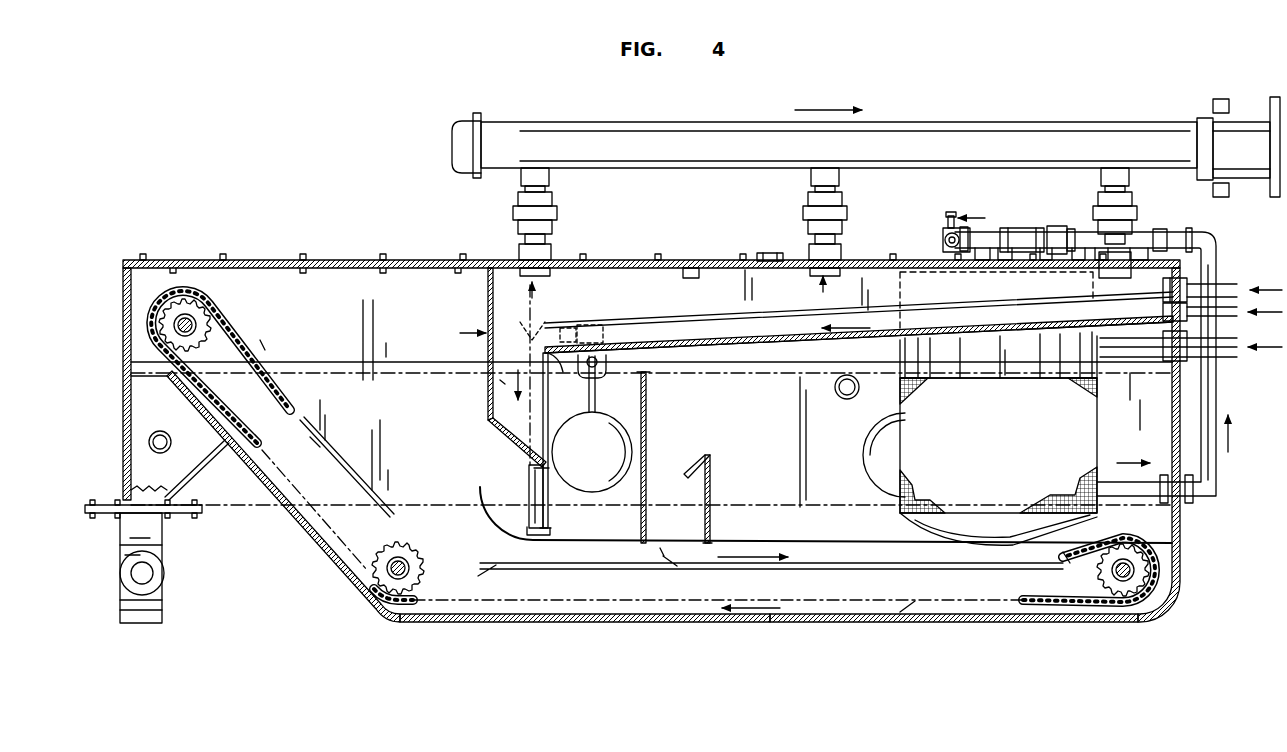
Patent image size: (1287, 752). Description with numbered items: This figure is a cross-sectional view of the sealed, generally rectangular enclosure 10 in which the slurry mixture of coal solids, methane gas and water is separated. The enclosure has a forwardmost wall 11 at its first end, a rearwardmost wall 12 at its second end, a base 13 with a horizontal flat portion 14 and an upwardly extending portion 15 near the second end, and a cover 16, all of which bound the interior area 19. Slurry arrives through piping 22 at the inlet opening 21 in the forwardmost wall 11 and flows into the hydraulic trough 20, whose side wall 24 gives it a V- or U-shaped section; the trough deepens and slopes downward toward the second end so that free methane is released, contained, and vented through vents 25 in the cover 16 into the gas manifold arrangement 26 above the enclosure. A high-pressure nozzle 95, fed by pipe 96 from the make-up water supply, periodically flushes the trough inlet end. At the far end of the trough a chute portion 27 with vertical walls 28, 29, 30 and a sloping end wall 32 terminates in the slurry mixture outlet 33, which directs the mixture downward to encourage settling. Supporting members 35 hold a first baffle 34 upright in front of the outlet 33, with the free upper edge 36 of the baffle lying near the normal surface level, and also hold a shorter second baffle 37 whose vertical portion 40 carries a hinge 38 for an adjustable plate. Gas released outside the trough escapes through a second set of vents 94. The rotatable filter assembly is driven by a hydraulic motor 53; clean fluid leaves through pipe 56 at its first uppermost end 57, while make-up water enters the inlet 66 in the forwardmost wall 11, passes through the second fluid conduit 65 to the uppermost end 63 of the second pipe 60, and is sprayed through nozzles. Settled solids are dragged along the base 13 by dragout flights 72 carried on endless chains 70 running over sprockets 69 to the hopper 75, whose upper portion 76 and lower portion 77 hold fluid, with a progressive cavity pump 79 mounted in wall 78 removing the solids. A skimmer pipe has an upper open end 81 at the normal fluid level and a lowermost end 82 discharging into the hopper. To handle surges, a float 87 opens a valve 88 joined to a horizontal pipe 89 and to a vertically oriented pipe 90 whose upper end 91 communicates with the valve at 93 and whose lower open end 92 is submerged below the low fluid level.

The enclosure 10 is at (272, 224).
The forwardmost wall 11 is at (1180, 402).
The rearwardmost wall 12 is at (122, 330).
The base 13 is at (722, 624).
The horizontal flat portion 14 is at (800, 623).
The upwardly extending portion 15 is at (322, 572).
The cover 16 is at (340, 258).
The interior area 19 is at (355, 532).
The hydraulic trough 20 is at (817, 352).
The inlet opening 21 is at (1163, 290).
The piping 22 is at (1225, 289).
The trough side wall 24 is at (692, 266).
The vents 25 is at (519, 248).
The gas manifold arrangement 26 is at (980, 125).
The chute portion 27 is at (459, 331).
The chute wall 28 is at (488, 402).
The chute wall 29 is at (549, 382).
The chute wall 30 is at (500, 383).
The sloping end wall 32 is at (528, 440).
The slurry mixture outlet 33 is at (537, 454).
The first baffle 34 is at (648, 432).
The supporting members 35 is at (788, 543).
The partition top edge 36 is at (651, 374).
The second baffle 37 is at (714, 496).
The hinge 38 is at (690, 472).
The vertical portion 40 is at (712, 462).
The hydraulic motor 53 is at (995, 233).
The pipe 56 is at (1062, 262).
The first uppermost end 57 is at (1062, 232).
The second pipe 60 is at (940, 238).
The uppermost end 63 is at (952, 268).
The second fluid conduit 65 is at (1040, 226).
The inlet 66 is at (1222, 352).
The sprockets 69 is at (208, 320).
The endless chains 70 is at (290, 398).
The dragout flights 72 is at (264, 345).
The hopper 75 is at (121, 410).
The upper portion 76 is at (122, 440).
The lower portion 77 is at (120, 530).
The wall 78 is at (163, 538).
The progressive cavity pump 79 is at (165, 575).
The upper open end 81 is at (845, 400).
The lowermost end 82 is at (157, 430).
The float 87 is at (592, 493).
The valve 88 is at (606, 328).
The horizontal pipe 89 is at (606, 374).
The vertically oriented pipe 90 is at (530, 488).
The upper end 91 is at (522, 375).
The lower open end 92 is at (549, 525).
The connection 93 is at (567, 327).
The second set of vents 94 is at (758, 253).
The high-pressure nozzle 95 is at (1163, 312).
The pipe 96 is at (1222, 313).